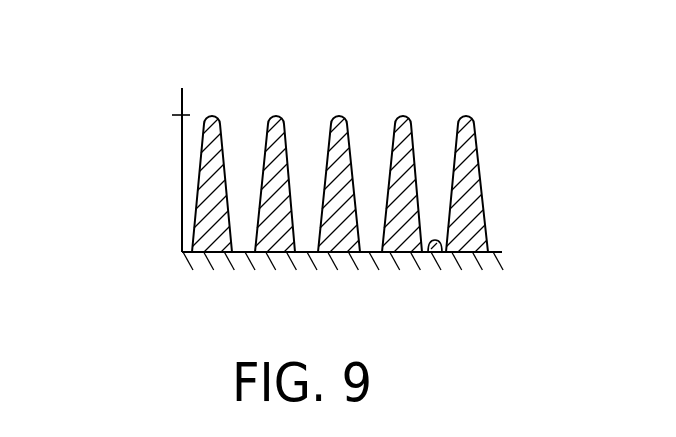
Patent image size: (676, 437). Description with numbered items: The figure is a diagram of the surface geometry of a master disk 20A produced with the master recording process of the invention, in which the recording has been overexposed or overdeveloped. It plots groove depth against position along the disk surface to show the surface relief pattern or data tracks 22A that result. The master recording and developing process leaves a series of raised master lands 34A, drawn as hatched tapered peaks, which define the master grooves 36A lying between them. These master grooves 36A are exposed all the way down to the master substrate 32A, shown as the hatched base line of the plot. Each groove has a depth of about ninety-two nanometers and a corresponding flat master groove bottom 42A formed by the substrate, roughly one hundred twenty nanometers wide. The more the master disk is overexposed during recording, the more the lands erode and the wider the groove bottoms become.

The master disk 20A is at (150, 73).
The surface relief pattern or data tracks 22A is at (365, 118).
The master substrate 32A is at (483, 257).
The master lands 34A is at (477, 128).
The master grooves 36A is at (428, 142).
The master groove bottom 42A is at (430, 257).